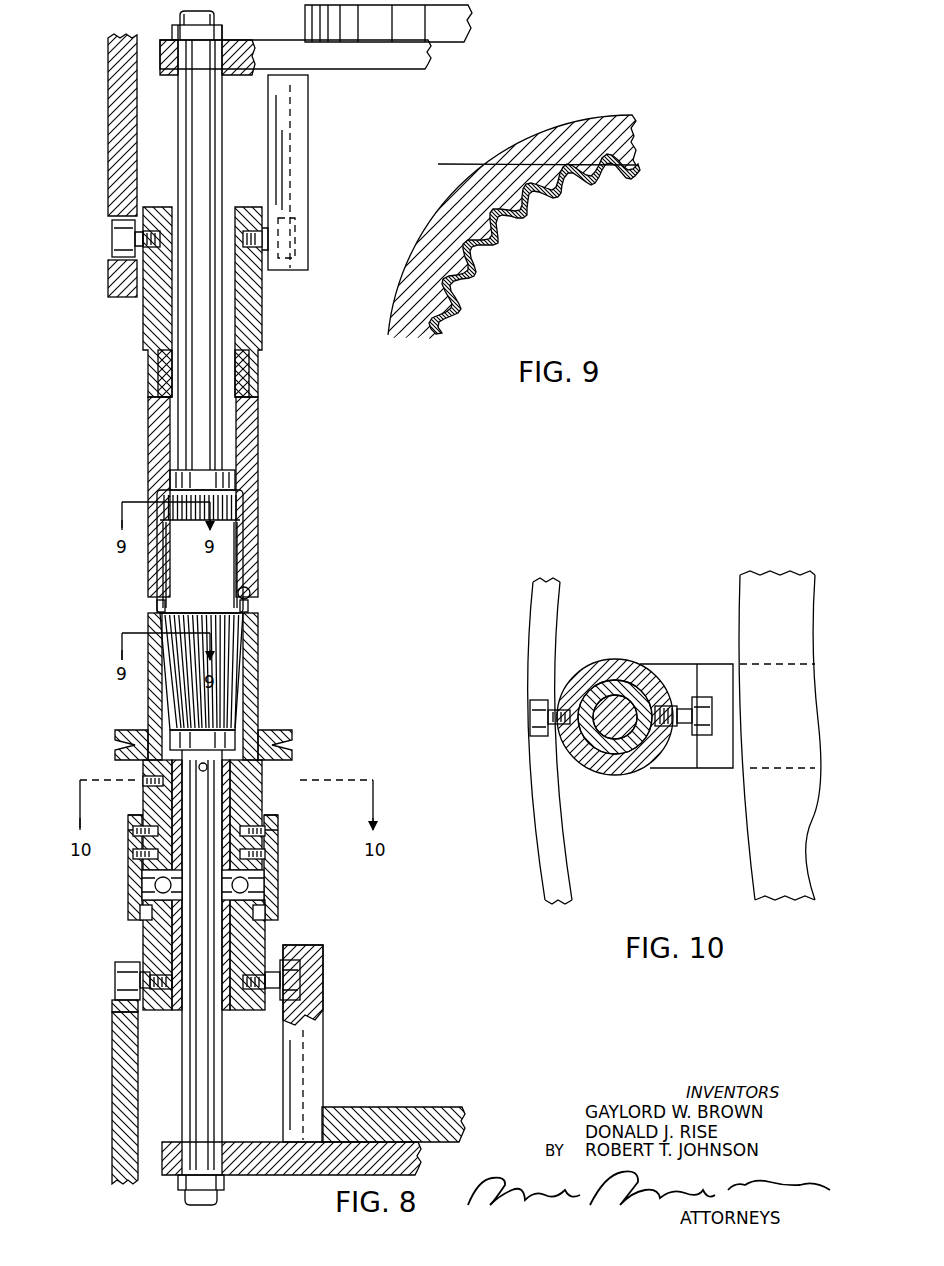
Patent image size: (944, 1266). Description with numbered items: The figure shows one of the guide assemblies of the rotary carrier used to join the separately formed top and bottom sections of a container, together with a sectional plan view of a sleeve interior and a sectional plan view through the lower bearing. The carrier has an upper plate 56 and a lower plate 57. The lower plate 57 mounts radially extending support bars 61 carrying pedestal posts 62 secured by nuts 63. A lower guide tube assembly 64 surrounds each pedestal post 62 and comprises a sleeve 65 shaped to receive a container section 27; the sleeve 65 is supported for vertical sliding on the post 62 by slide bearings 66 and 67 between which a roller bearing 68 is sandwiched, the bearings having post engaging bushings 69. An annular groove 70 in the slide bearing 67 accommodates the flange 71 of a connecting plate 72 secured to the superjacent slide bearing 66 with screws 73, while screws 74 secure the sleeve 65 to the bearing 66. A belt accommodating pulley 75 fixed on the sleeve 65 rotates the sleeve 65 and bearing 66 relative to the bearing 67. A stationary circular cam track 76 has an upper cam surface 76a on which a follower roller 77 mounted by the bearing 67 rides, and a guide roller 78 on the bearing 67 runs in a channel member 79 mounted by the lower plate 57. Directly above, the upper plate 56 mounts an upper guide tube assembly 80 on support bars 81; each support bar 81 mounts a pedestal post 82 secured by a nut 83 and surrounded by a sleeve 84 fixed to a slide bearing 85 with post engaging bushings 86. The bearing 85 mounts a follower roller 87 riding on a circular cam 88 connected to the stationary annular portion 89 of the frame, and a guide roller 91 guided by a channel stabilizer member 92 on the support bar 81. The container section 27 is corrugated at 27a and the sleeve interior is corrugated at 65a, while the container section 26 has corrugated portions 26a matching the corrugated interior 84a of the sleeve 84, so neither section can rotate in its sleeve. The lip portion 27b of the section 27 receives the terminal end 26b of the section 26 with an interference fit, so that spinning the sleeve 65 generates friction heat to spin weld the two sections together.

In FIG. 8, the container section 26 is at (246, 545).
In FIG. 8, the ribbed or corrugated portions 26a is at (245, 498).
In FIG. 8, the terminal end 26b is at (250, 590).
In FIG. 8, the container section 27 is at (250, 640).
In FIG. 8, the ribbed or corrugated portion 27a is at (250, 660).
In FIG. 8, the lip or flange portion 27b is at (250, 612).
In FIG. 8, the upper disk or plate 56 is at (462, 40).
In FIG. 8, the lower disk or plate 57 is at (425, 1115).
In FIG. 10, the lower disk or plate 57 is at (762, 838).
In FIG. 8, the support bar 61 is at (420, 1150).
In FIG. 10, the support bar 61 is at (680, 762).
In FIG. 8, the pedestal post 62 is at (210, 1085).
In FIG. 10, the pedestal post 62 is at (615, 700).
In FIG. 8, the nut 63 is at (224, 1185).
In FIG. 8, the lower guide tube assembly 64 is at (270, 720).
In FIG. 8, the sleeve 65 is at (258, 665).
In FIG. 10, the sleeve 65 is at (625, 770).
In FIG. 8, the ribbed or corrugated interior 65a is at (248, 690).
In FIG. 9, the ribbed or corrugated interior 65a is at (458, 270).
In FIG. 8, the slide bearing 66 is at (262, 802).
In FIG. 10, the slide bearing 66 is at (605, 760).
In FIG. 8, the slide bearing 67 is at (262, 945).
In FIG. 8, the roller bearing 68 is at (268, 882).
In FIG. 8, the post engaging bushing 69 is at (176, 790).
In FIG. 10, the post engaging bushing 69 is at (605, 758).
In FIG. 8, the annular groove 70 is at (140, 915).
In FIG. 8, the flange 71 is at (265, 912).
In FIG. 8, the connecting plate 72 is at (266, 830).
In FIG. 10, the connecting plate 72 is at (535, 710).
In FIG. 8, the screw 73 is at (266, 853).
In FIG. 8, the screw 74 is at (148, 788).
In FIG. 8, the belt accommodating pulley 75 is at (292, 735).
In FIG. 8, the circular cam track 76 is at (112, 1110).
In FIG. 10, the circular cam track 76 is at (550, 741).
In FIG. 8, the upper cam surface 76a is at (118, 1005).
In FIG. 8, the follower roller 77 is at (115, 980).
In FIG. 10, the follower roller 77 is at (537, 735).
In FIG. 8, the guide roller 78 is at (300, 975).
In FIG. 10, the guide roller 78 is at (705, 735).
In FIG. 8, the channel member 79 is at (323, 1005).
In FIG. 10, the channel member 79 is at (712, 668).
In FIG. 8, the upper guide tube assembly 80 is at (264, 458).
In FIG. 8, the support bar 81 is at (385, 72).
In FIG. 8, the pedestal post 82 is at (190, 110).
In FIG. 8, the nut 83 is at (180, 30).
In FIG. 8, the sleeve 84 is at (258, 415).
In FIG. 8, the corrugated interior 84a is at (250, 515).
In FIG. 9, the corrugated interior 84a is at (468, 252).
In FIG. 8, the slide bearing 85 is at (262, 325).
In FIG. 8, the post engaging bushing 86 is at (162, 390).
In FIG. 8, the follower roller 87 is at (112, 240).
In FIG. 8, the circular cam 88 is at (113, 292).
In FIG. 8, the stationary annular portion 89 is at (108, 100).
In FIG. 8, the guide roller 91 is at (295, 218).
In FIG. 8, the channel stabilizer member 92 is at (308, 125).